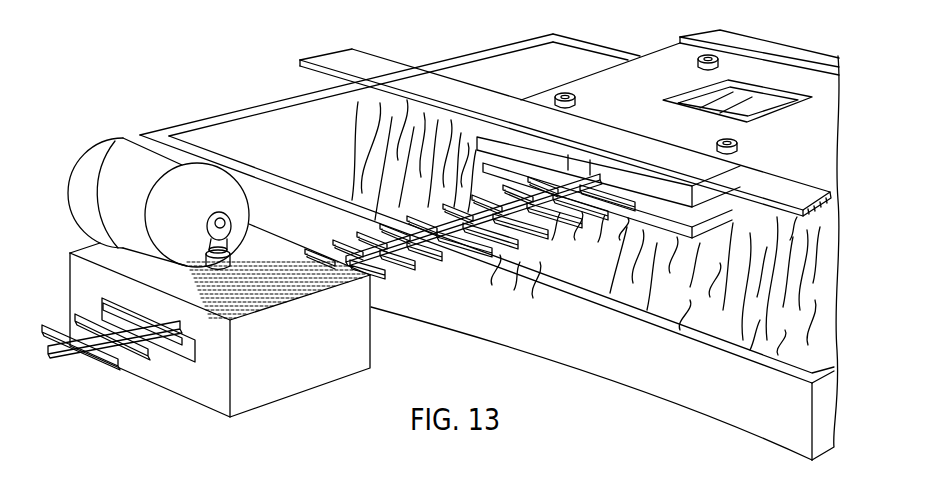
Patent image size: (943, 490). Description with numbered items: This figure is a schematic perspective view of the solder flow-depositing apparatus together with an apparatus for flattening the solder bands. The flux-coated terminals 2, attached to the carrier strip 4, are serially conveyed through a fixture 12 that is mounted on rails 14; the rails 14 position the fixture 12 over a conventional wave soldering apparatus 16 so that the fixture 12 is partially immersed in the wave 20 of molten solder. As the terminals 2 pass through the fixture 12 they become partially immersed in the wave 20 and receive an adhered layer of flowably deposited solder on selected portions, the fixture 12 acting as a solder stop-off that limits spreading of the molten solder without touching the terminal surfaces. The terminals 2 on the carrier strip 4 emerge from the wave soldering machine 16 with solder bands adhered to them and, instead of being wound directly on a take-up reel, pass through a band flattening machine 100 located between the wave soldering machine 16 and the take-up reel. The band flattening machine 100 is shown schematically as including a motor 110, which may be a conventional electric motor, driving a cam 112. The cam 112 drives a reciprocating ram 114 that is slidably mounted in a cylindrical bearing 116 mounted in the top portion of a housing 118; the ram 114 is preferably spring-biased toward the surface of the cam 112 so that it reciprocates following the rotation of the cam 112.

The terminals 2 is at (416, 256).
The carrier strip 4 is at (372, 252).
The fixture 12 is at (606, 82).
The rails 14 is at (393, 69).
The wave soldering apparatus 16 is at (590, 341).
The wave of molten solder 20 is at (685, 296).
The band flattening machine 100 is at (206, 324).
The motor 110 is at (80, 203).
The cam 112 is at (233, 228).
The reciprocating ram 114 is at (228, 252).
The cylindrical bearing 116 is at (208, 264).
The housing 118 is at (316, 350).